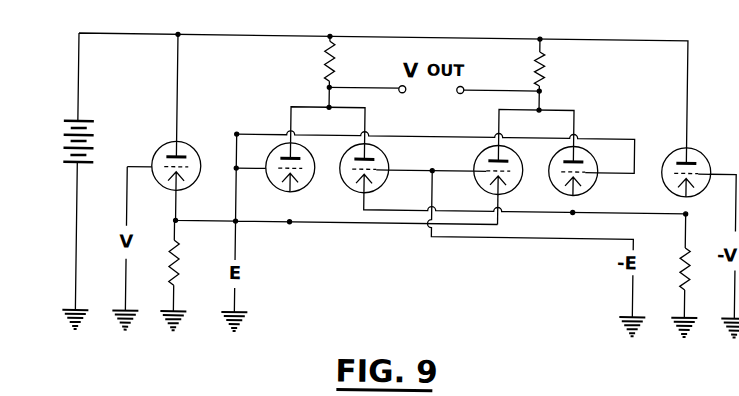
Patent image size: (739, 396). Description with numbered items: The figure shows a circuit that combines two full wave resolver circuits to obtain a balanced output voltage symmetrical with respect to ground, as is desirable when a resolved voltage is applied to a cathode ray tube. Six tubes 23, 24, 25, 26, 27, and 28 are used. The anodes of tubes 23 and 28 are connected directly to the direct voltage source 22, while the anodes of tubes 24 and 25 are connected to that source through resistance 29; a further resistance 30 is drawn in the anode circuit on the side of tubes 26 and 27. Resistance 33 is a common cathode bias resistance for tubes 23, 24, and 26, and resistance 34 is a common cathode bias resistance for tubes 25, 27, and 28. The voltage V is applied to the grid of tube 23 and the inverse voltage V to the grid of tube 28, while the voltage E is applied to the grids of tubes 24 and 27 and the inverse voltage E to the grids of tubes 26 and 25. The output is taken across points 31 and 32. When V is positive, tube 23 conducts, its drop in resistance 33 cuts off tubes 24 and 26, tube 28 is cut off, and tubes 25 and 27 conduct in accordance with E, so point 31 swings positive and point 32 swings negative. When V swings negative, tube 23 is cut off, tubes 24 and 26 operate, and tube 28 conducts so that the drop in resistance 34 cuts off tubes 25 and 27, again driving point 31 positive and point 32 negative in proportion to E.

The direct voltage source 22 is at (68, 136).
The tube 23 is at (187, 142).
The tube 24 is at (274, 179).
The tube 25 is at (385, 174).
The tube 26 is at (476, 180).
The tube 27 is at (587, 141).
The tube 28 is at (699, 144).
The resistance 29 is at (323, 63).
The plate resistor 30 is at (546, 64).
The point 31 is at (399, 82).
The point 32 is at (467, 81).
The common cathode bias resistance 33 is at (183, 262).
The common cathode bias resistance 34 is at (693, 268).